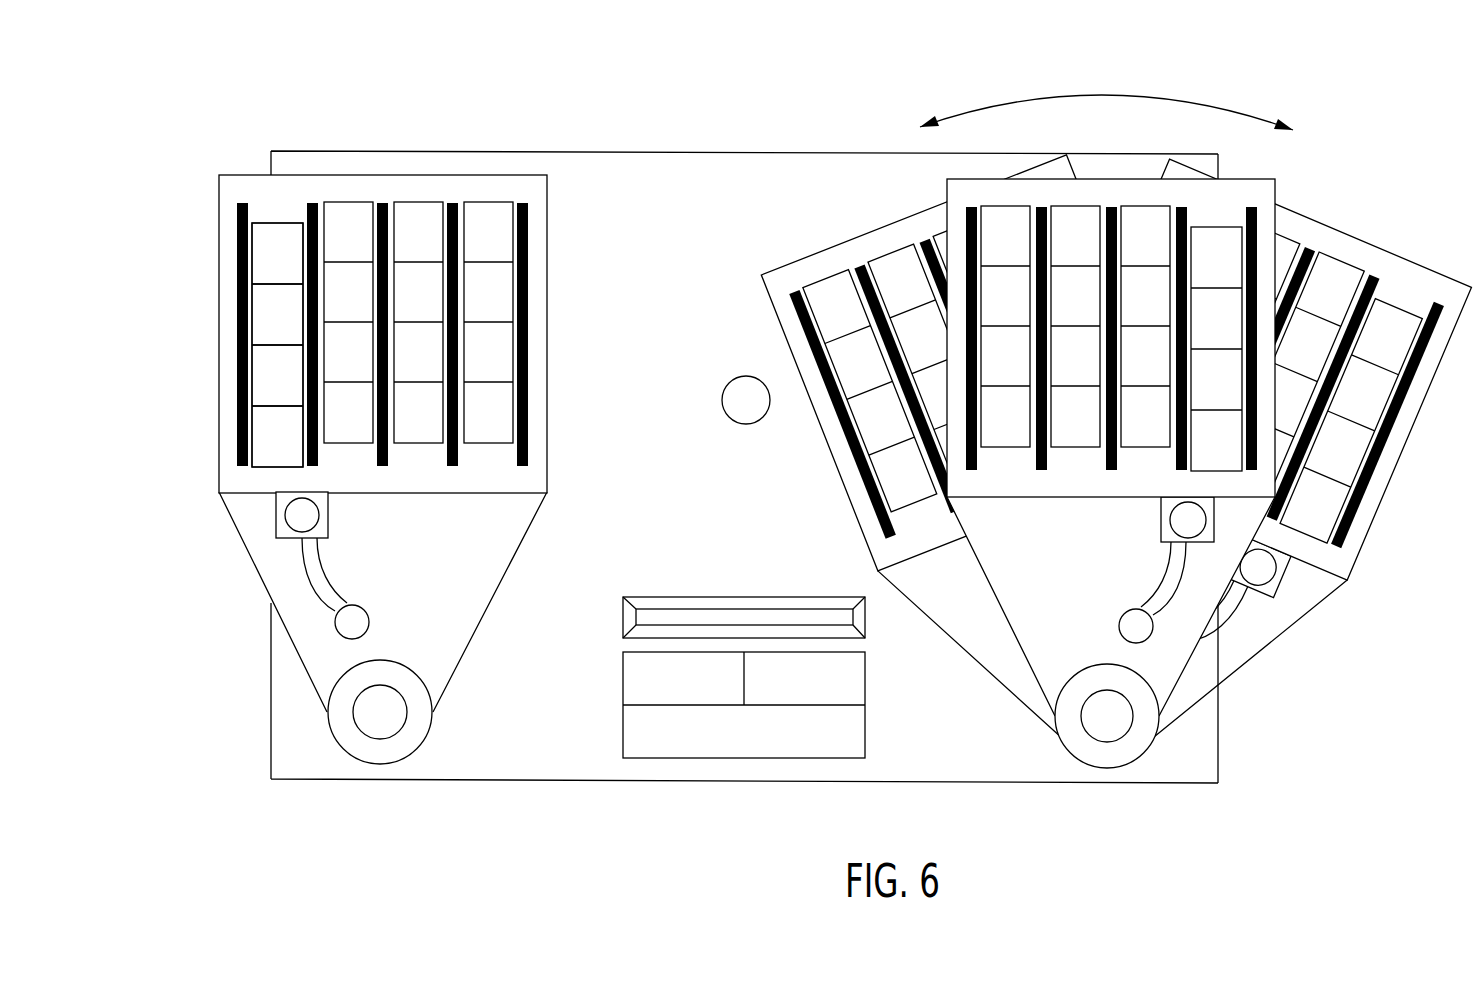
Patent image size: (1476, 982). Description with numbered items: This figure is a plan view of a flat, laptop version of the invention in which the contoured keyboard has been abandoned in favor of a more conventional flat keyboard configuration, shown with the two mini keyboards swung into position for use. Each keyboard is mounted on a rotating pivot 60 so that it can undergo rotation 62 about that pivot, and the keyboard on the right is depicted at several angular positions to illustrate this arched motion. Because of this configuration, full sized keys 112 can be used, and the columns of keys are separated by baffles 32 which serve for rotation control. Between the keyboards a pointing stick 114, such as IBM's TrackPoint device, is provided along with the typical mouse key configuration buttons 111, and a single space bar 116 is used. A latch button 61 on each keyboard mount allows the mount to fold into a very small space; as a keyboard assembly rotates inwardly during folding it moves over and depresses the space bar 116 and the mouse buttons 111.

The baffle 32 is at (523, 203).
The full sized key 112 is at (272, 368).
The pointing stick 114 is at (749, 397).
The rotation 62 is at (1106, 94).
The latch button 61 is at (302, 515).
The rotating pivot 60 is at (348, 753).
The space bar 116 is at (650, 617).
The mouse key configuration button 111 is at (802, 677).